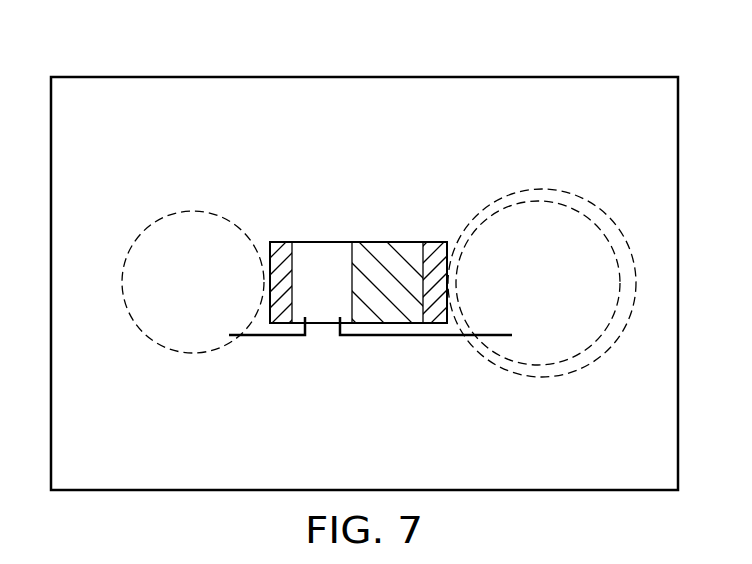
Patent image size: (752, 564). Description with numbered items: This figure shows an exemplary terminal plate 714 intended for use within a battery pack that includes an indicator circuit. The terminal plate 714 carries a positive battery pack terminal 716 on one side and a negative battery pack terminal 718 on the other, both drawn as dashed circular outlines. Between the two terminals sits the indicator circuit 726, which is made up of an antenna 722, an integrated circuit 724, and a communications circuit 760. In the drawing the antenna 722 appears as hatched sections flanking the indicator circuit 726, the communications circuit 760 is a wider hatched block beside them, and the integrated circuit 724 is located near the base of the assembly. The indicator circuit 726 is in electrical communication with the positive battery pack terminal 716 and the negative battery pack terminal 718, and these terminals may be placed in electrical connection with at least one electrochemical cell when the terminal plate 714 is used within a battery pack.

The terminal plate 714 is at (365, 76).
The positive battery pack terminal 716 is at (188, 210).
The negative battery pack terminal 718 is at (533, 187).
The antenna 722 is at (278, 242).
The integrated circuit 724 is at (325, 318).
The indicator circuit 726 is at (341, 218).
The communications circuit 760 is at (392, 242).